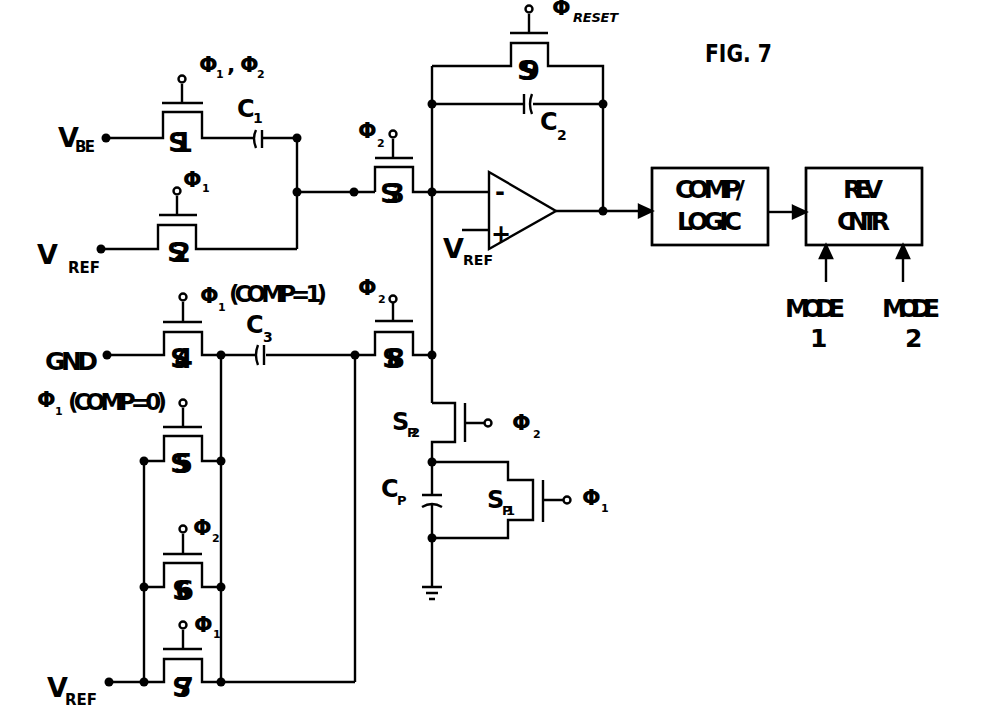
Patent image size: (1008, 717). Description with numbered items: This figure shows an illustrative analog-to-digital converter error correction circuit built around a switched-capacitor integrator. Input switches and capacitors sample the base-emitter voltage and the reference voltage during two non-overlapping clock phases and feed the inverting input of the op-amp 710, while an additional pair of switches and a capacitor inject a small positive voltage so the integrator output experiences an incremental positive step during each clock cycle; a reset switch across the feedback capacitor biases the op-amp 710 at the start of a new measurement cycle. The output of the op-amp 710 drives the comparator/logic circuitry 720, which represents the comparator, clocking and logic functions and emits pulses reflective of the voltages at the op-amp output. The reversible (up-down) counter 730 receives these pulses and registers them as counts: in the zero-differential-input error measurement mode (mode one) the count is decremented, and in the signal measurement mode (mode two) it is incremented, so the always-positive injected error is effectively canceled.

The op-amp 710 is at (502, 175).
The comparator/logic circuitry 720 is at (672, 168).
The reversible (up-down) counter 730 is at (825, 168).